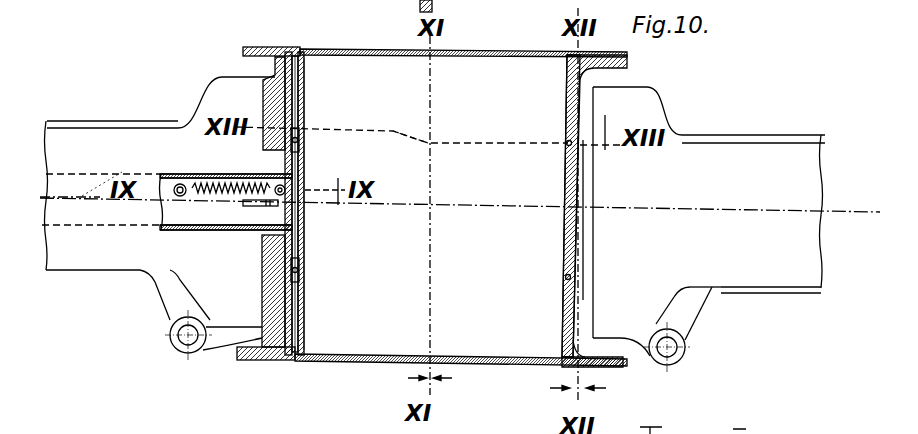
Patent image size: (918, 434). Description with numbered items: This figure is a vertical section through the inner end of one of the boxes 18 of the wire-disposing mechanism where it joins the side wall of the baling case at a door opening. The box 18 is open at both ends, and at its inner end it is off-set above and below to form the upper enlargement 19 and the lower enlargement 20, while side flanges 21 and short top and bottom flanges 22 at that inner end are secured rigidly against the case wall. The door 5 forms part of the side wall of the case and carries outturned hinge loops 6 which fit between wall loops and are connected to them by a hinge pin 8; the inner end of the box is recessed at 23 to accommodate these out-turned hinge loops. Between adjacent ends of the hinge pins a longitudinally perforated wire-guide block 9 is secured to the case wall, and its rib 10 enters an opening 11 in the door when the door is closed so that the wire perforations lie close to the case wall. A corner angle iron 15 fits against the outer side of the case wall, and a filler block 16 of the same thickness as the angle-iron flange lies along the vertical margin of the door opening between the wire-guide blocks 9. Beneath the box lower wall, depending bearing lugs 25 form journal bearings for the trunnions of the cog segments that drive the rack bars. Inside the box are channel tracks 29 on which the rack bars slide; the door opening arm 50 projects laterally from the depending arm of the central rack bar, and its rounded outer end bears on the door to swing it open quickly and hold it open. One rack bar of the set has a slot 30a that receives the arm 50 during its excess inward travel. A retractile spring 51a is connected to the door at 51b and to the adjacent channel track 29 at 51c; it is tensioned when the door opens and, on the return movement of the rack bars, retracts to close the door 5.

The door 5 is at (402, 130).
The hinge loop 6 is at (297, 52).
The hinge pin 8 is at (306, 92).
The wire-guide block 9 is at (302, 268).
The rib 10 is at (300, 125).
The opening 11 is at (345, 204).
The corner angle iron 15 is at (628, 60).
The filler block 16 is at (575, 200).
The box 18 is at (72, 262).
The upper enlargement or extension 19 is at (218, 97).
The lower enlargement or extension 20 is at (165, 277).
The side flange 21 is at (593, 240).
The top and bottom flange 22 is at (277, 68).
The recess 23 is at (267, 150).
The bearing lug 25 is at (167, 318).
The channel track 29 is at (195, 215).
The slot 30a is at (245, 208).
The door opening arm 50 is at (300, 220).
The retractile spring 51a is at (224, 205).
The spring connection to door 51b is at (300, 185).
The spring connection to channel track 51c is at (176, 196).